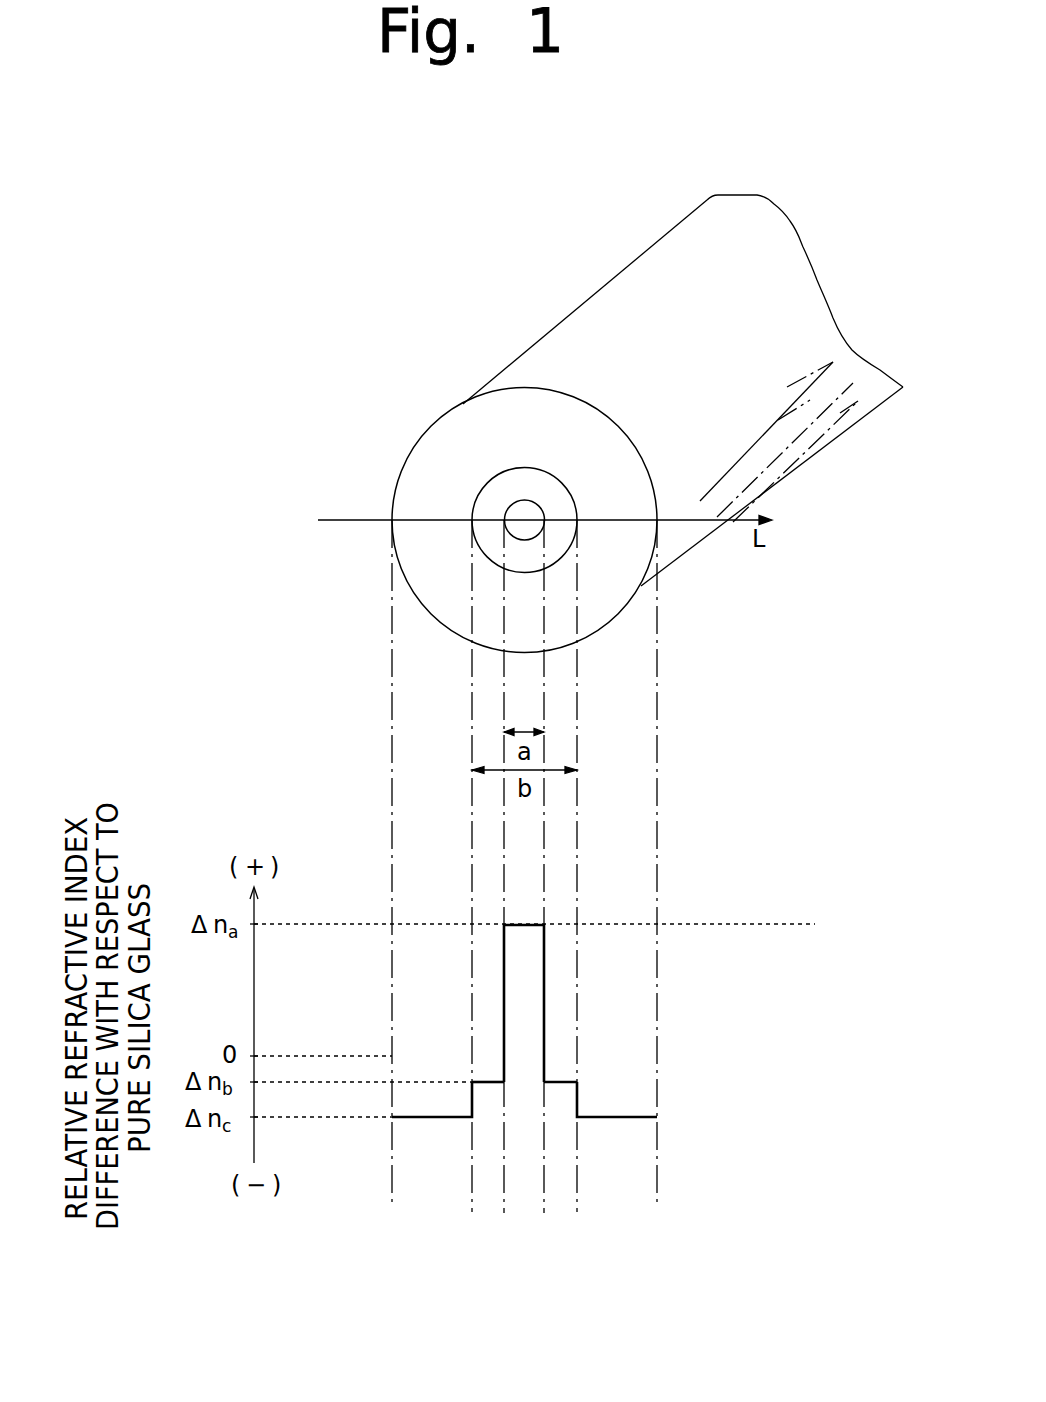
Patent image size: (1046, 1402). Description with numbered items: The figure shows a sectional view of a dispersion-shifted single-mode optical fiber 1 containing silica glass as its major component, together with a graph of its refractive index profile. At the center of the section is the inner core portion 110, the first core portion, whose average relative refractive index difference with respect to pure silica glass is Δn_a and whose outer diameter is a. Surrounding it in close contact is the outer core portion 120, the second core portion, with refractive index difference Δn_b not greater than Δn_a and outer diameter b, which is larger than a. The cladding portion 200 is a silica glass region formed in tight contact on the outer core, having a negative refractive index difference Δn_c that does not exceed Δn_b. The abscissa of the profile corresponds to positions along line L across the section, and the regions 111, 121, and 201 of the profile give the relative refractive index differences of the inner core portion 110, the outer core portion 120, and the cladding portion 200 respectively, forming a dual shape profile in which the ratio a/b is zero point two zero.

The single-mode optical fiber 1 is at (777, 500).
The inner core portion 110 is at (537, 503).
The region of refractive index profile corresponding to inner core portion 111 is at (538, 1171).
The outer core portion 120 is at (543, 477).
The region of refractive index profile corresponding to outer core portion 121 is at (500, 1171).
The cladding portion 200 is at (495, 415).
The region of refractive index profile corresponding to cladding portion 201 is at (468, 1171).